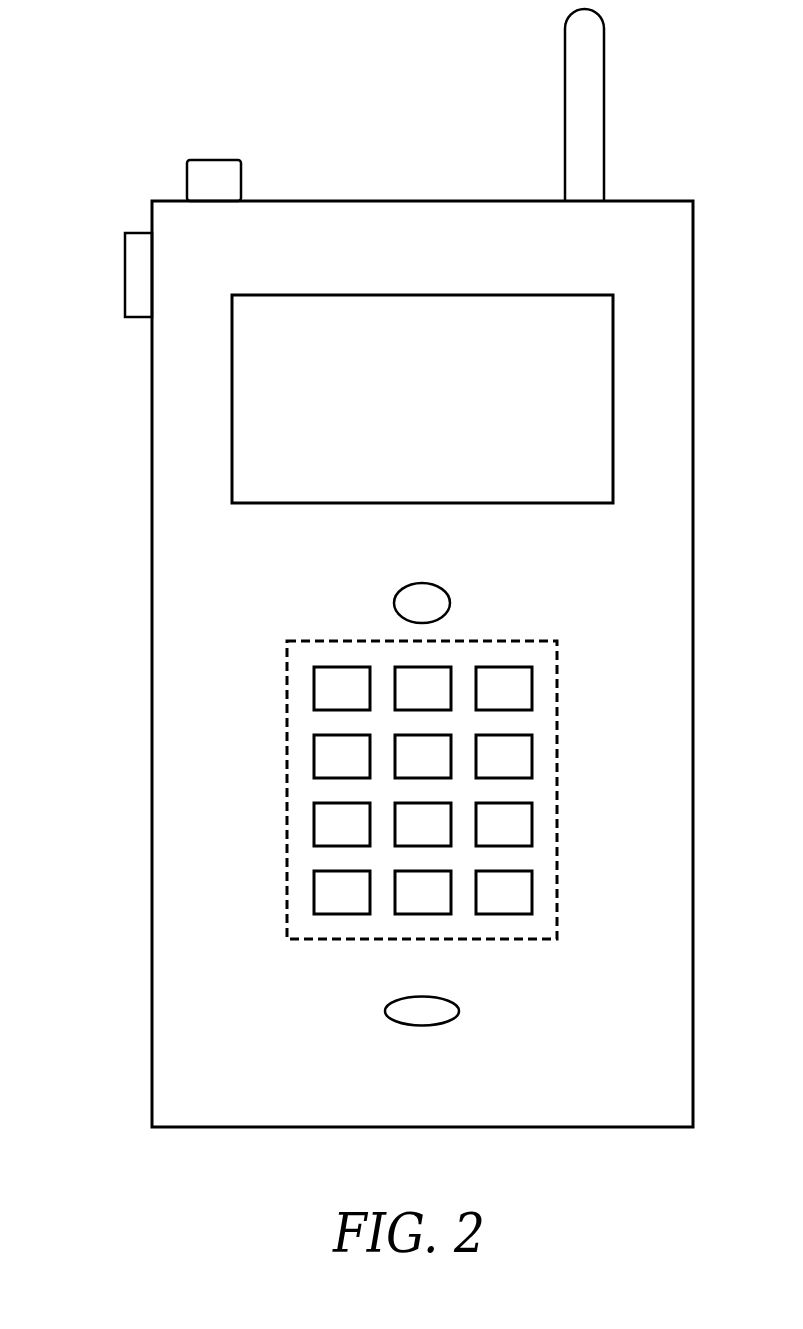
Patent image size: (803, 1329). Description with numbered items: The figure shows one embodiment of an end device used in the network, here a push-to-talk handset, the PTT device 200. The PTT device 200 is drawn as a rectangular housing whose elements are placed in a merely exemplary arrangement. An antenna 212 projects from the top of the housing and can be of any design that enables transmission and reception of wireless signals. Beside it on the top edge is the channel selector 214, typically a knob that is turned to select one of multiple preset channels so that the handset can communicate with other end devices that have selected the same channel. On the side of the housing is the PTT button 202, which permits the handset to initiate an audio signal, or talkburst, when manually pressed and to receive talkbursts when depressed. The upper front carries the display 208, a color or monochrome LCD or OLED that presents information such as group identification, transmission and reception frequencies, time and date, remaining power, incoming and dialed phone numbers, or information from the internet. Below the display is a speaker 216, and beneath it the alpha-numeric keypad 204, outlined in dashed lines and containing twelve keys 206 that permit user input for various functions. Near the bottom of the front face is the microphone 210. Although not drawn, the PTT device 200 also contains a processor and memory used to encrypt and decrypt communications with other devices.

The PTT device 200 is at (657, 1093).
The PTT button 202 is at (125, 278).
The alpha-numeric keypad 204 is at (308, 641).
The keys 206 is at (300, 824).
The display 208 is at (250, 295).
The microphone 210 is at (385, 1011).
The antenna 212 is at (565, 72).
The channel selector 214 is at (215, 160).
The speaker 216 is at (425, 583).